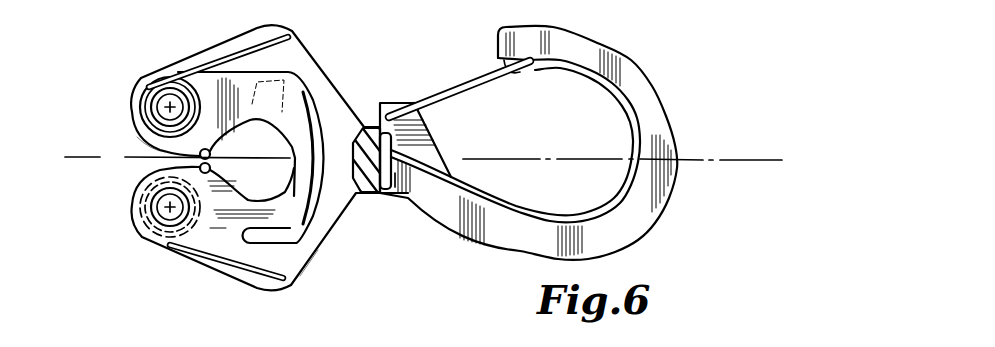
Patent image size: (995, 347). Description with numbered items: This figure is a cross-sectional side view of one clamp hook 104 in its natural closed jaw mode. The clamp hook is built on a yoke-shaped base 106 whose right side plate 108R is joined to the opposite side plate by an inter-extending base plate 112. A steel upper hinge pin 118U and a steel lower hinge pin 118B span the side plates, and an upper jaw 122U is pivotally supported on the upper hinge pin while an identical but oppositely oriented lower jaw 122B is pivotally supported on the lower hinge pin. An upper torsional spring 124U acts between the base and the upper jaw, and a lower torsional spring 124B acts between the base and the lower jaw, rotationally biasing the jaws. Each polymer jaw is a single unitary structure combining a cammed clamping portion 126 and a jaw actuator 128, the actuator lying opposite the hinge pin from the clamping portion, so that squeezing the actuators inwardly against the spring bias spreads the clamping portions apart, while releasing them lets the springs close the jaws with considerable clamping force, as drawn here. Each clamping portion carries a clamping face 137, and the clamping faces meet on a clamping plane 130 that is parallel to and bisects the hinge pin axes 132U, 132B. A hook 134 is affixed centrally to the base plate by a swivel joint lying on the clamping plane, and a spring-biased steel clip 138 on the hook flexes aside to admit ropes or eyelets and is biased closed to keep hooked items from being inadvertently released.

The clamp hook 104 is at (545, 143).
The base 106 is at (313, 260).
The right side plate 108R is at (346, 122).
The base plate 112 is at (346, 205).
The upper hinge pin 118U is at (167, 100).
The lower hinge pin 118B is at (167, 217).
The upper jaw 122U is at (300, 78).
The lower jaw 122B is at (293, 278).
The upper torsional spring 124U is at (222, 58).
The lower torsional spring 124B is at (247, 271).
The cammed clamping portion 126 is at (162, 139).
The jaw actuator 128 is at (312, 74).
The clamping plane 130 is at (117, 165).
The upper hinge pin axis 132U is at (157, 89).
The lower hinge pin axis 132B is at (165, 209).
The hook 134 is at (657, 221).
The clamping face 137 is at (200, 154).
The spring-biased steel clip 138 is at (477, 93).